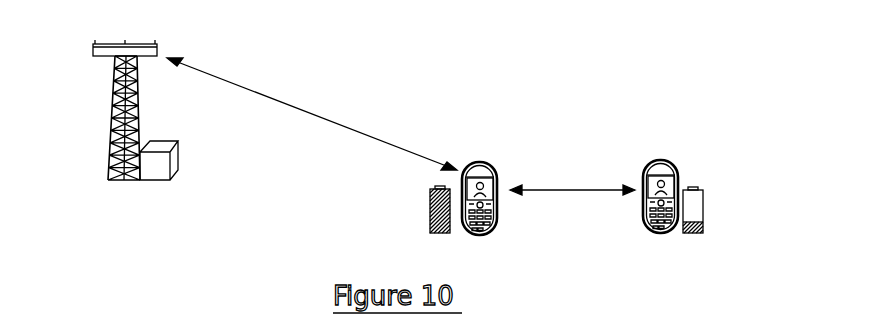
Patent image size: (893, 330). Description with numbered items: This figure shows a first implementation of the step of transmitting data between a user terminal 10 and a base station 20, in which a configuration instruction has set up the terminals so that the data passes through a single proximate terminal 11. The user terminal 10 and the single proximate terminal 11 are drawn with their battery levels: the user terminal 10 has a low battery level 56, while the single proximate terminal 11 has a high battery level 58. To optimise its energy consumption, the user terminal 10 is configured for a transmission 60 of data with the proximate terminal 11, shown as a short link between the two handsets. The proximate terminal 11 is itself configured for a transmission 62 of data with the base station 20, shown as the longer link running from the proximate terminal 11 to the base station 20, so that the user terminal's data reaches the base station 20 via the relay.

The user terminal 10 is at (665, 163).
The single proximate terminal 11 is at (483, 163).
The base station 20 is at (110, 118).
The low battery level 56 is at (705, 212).
The high battery level 58 is at (430, 215).
The transmission of data 60 is at (575, 191).
The transmission of data 62 is at (315, 115).